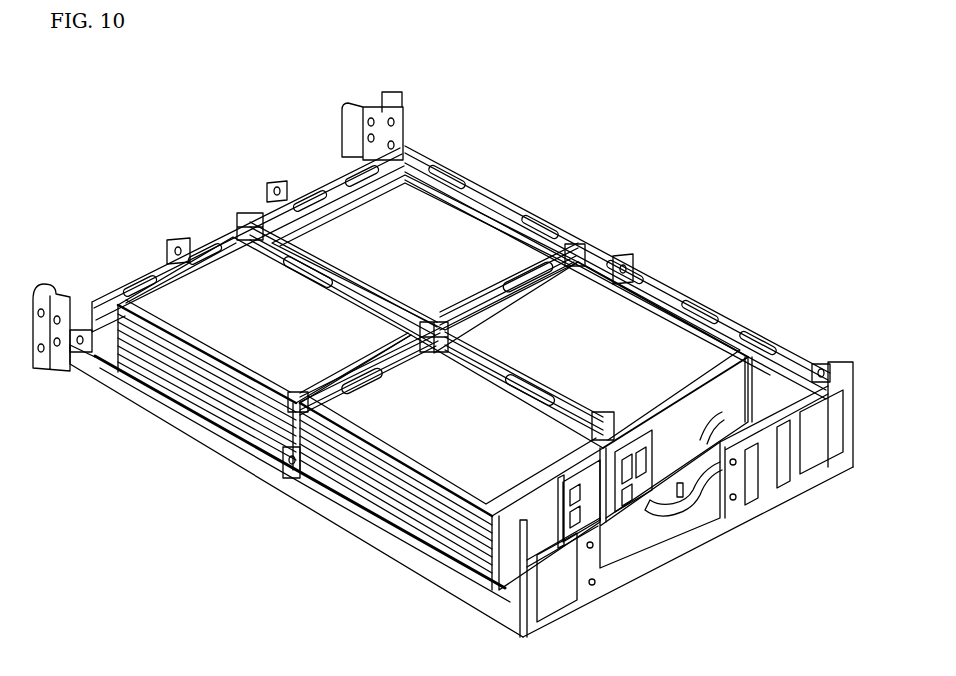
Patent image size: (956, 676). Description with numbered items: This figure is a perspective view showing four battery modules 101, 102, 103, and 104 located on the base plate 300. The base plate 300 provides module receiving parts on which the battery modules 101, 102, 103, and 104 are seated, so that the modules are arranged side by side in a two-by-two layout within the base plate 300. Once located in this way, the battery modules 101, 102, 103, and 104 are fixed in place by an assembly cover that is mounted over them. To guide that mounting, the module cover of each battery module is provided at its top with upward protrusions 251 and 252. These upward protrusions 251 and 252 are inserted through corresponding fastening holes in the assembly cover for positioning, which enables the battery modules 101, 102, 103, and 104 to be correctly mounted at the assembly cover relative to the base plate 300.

The battery module 101 is at (270, 320).
The battery module 102 is at (440, 418).
The battery module 103 is at (599, 338).
The battery module 104 is at (409, 238).
The upward protrusion 251 is at (555, 497).
The upward protrusion 252 is at (603, 472).
The base plate 300 is at (718, 546).